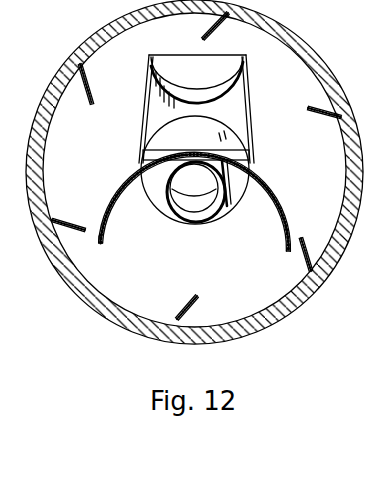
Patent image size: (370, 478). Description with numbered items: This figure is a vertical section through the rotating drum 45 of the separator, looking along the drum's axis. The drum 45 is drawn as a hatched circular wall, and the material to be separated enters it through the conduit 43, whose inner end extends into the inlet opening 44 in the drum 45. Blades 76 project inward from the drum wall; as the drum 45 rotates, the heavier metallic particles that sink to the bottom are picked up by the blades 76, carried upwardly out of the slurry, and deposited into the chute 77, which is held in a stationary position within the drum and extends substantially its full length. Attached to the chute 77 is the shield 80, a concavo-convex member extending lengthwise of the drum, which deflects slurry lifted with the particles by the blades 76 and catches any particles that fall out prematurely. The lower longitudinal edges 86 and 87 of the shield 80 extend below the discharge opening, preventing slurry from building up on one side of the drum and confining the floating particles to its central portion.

The drum 45 is at (320, 53).
The blades 76 is at (300, 253).
The chute 77 is at (237, 96).
The opening 44 is at (165, 131).
The shield 80 is at (276, 190).
The lower longitudinal edge 86 is at (106, 248).
The lower longitudinal edge 87 is at (285, 250).
The conduit 43 is at (212, 204).